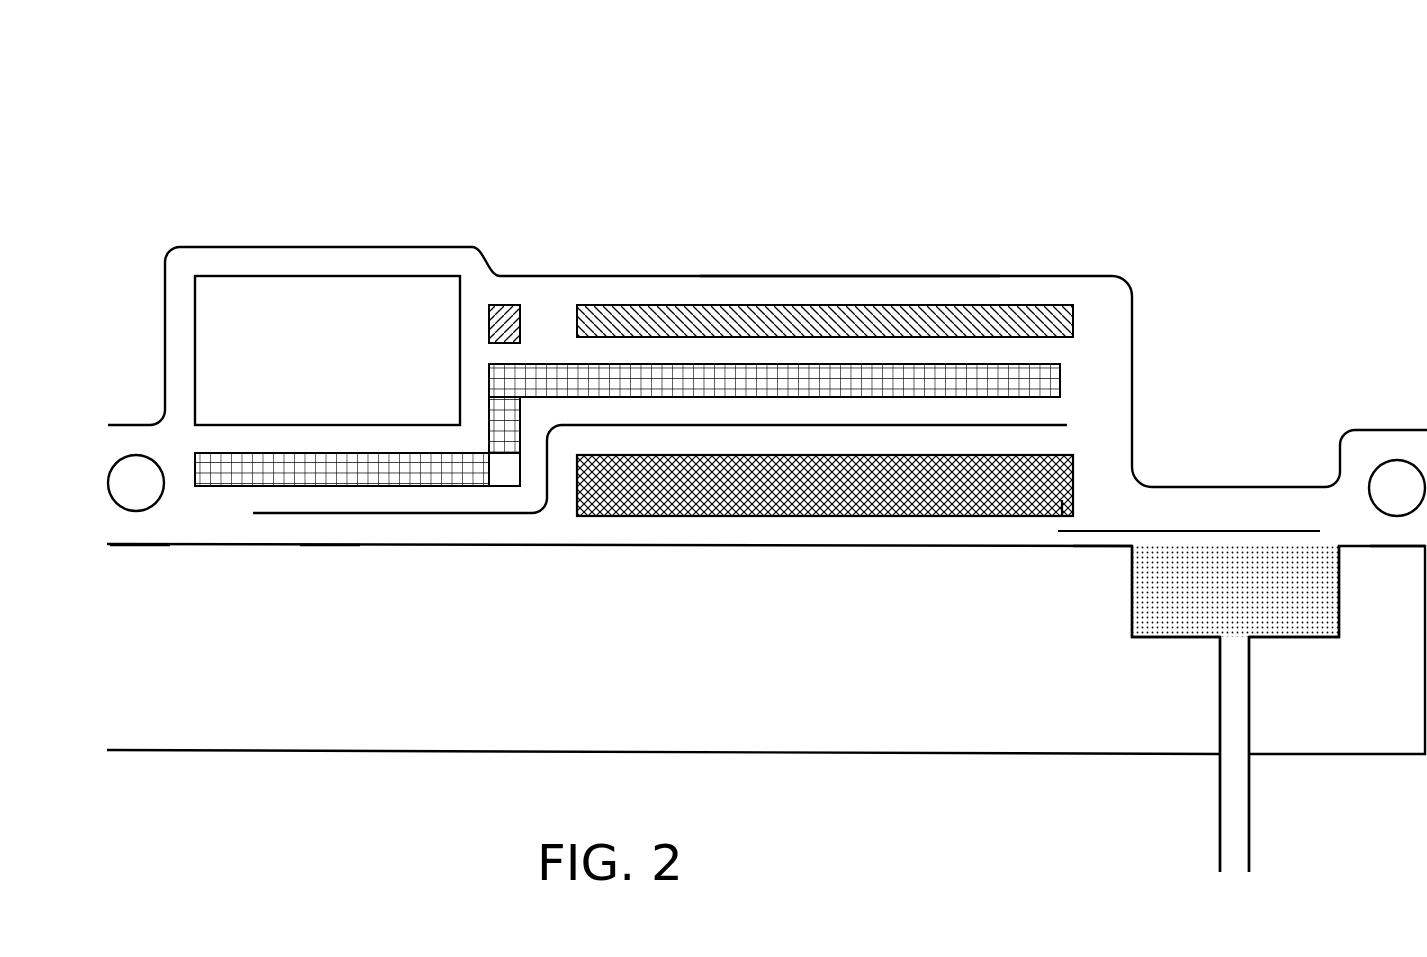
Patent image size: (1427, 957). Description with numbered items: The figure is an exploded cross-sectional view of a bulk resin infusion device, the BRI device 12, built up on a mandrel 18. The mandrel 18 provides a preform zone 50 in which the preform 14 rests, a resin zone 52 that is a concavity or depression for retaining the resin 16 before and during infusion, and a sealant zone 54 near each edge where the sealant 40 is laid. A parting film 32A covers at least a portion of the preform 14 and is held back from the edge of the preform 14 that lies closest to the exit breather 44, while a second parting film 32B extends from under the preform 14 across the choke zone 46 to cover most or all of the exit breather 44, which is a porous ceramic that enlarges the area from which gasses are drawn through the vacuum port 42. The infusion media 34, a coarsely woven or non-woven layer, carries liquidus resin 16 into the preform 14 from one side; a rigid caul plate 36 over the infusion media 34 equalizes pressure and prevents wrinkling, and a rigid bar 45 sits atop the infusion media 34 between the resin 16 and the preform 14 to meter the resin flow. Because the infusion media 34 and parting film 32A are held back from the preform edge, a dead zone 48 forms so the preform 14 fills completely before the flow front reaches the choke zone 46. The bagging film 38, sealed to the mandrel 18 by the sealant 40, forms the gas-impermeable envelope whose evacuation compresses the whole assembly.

The BRI device 12 is at (1010, 56).
The preform 14 is at (1073, 472).
The resin 16 is at (364, 276).
The mandrel 18 is at (1060, 547).
The parting film 32A is at (1067, 425).
The parting film 32B is at (1197, 531).
The infusion media 34 is at (953, 365).
The caul plate 36 is at (882, 306).
The bagging film 38 is at (845, 277).
The sealant 40 is at (165, 483).
The vacuum port 42 is at (1220, 813).
The exit breather 44 is at (1132, 612).
The rigid bar 45 is at (519, 305).
The choke zone 46 is at (1115, 555).
The dead zone 48 is at (1060, 505).
The preform zone 50 is at (825, 550).
The resin zone 52 is at (327, 550).
The sealant zone 54 is at (137, 550).